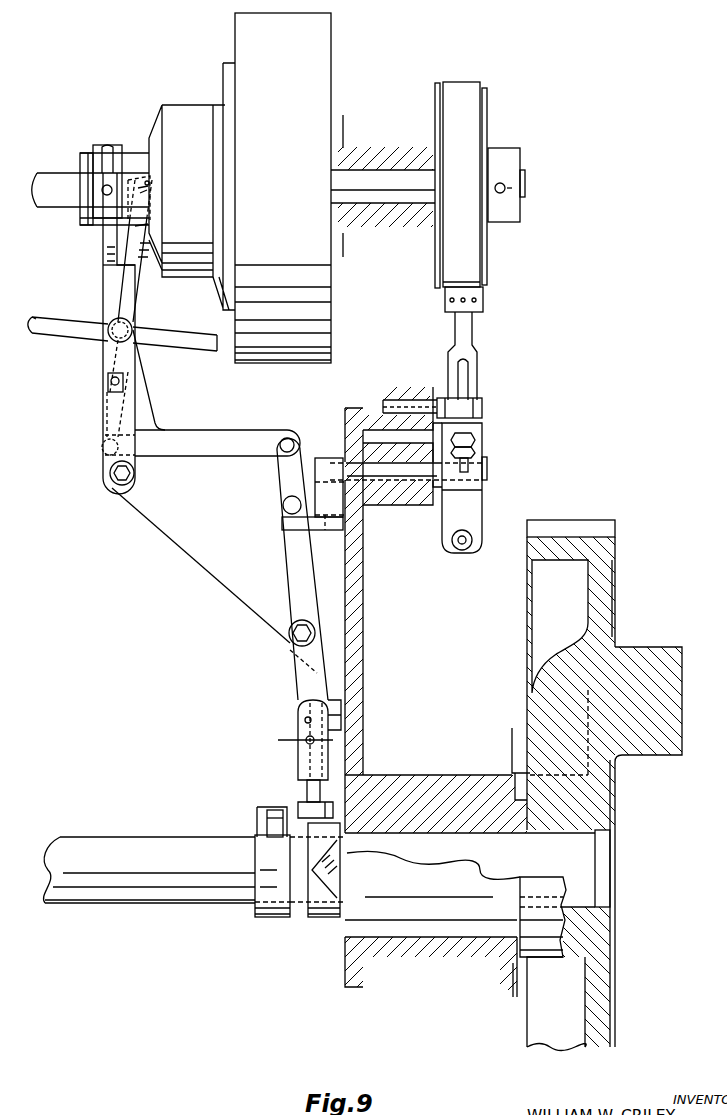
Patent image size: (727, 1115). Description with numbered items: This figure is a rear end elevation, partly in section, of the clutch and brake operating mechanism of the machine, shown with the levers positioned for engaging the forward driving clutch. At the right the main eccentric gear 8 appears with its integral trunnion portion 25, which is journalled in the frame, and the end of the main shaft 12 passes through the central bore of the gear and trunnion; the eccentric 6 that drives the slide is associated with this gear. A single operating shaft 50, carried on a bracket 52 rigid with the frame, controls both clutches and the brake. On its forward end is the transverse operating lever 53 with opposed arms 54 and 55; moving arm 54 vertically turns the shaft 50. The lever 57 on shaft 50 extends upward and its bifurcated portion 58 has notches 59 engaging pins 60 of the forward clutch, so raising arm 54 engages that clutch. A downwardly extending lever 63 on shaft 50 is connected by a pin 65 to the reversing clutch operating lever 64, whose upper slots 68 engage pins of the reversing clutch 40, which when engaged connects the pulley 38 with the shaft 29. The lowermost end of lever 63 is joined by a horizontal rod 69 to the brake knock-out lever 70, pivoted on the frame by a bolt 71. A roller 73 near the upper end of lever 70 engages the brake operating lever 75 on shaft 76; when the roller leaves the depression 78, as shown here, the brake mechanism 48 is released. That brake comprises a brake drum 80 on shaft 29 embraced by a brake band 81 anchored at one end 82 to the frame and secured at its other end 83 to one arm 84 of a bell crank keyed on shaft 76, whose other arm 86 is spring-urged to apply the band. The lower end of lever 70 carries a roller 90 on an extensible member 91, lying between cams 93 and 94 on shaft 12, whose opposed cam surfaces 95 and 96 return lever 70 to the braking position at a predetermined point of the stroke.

The pulley 38 is at (325, 42).
The reversing clutch 40 is at (193, 106).
The shaft 29 is at (50, 178).
The slots 68 is at (103, 155).
The notches 59 is at (150, 178).
The pins 60 is at (152, 190).
The lever 57 is at (134, 290).
The bifurcated portion 58 is at (142, 230).
The reversing clutch operating lever 64 is at (104, 278).
The operating shaft 50 is at (134, 322).
The transverse operating lever 53 is at (65, 336).
The arm 54 is at (38, 318).
The arm 55 is at (216, 349).
The pin 65 is at (107, 382).
The lever 63 is at (100, 432).
The bracket 52 is at (150, 528).
The horizontal rod 69 is at (193, 452).
The roller 73 is at (283, 508).
The depression 78 is at (282, 532).
The brake operating lever 75 is at (345, 524).
The bolt 71 is at (289, 641).
The brake knock-out lever 70 is at (296, 682).
The member 91 is at (306, 790).
The roller 90 is at (297, 810).
The cam surface 96 is at (257, 823).
The main shaft 12 is at (98, 838).
The cam 94 is at (272, 919).
The cam 93 is at (327, 919).
The cam surface 95 is at (312, 857).
The shaft 76 is at (398, 481).
The brake band 81 is at (475, 86).
The brake drum 80 is at (487, 261).
The brake mechanism 48 is at (481, 304).
The anchored end of brake band 82 is at (484, 405).
The arm of bell crank 84 is at (480, 433).
The secured end of brake band 83 is at (470, 467).
The arm of bell crank 86 is at (473, 505).
The main eccentric gear 8 is at (607, 613).
The eccentric 6 is at (651, 751).
The trunnion portion 25 is at (432, 805).